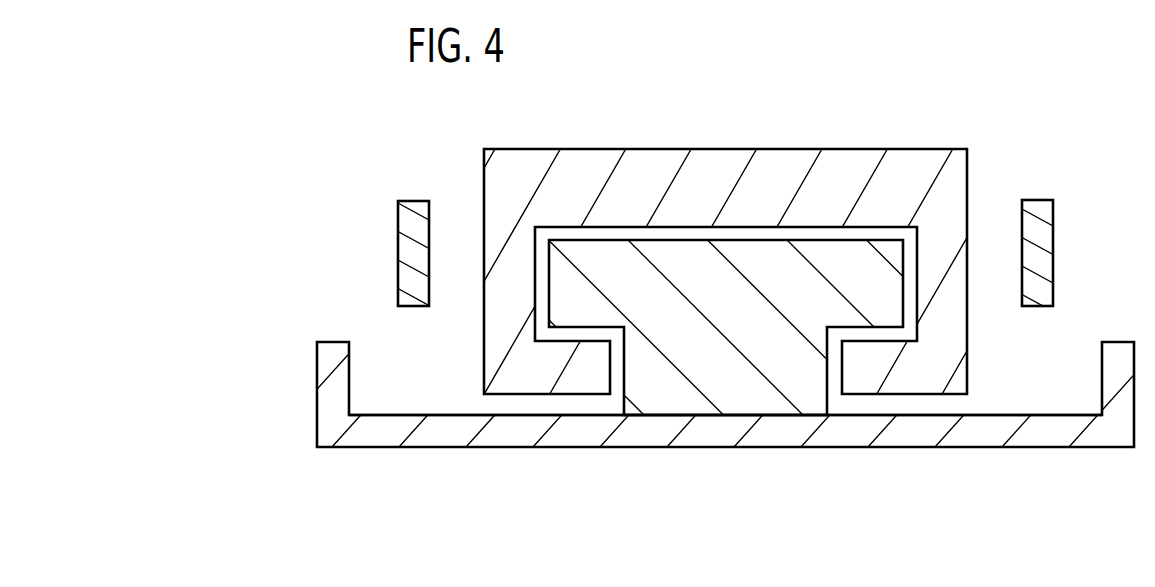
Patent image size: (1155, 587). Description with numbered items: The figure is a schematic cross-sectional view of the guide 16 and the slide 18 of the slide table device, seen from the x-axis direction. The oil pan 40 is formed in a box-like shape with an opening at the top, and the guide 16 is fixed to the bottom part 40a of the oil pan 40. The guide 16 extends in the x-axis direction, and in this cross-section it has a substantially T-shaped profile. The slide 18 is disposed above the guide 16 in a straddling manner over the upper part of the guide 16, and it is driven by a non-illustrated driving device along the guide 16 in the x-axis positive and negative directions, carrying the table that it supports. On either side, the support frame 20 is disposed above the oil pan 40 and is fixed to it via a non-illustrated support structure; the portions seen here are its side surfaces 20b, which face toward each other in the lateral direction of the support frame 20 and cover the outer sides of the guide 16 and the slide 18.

The guide 16 is at (725, 388).
The slide 18 is at (715, 149).
The support frame 20 is at (733, 230).
The side surfaces 20b is at (412, 249).
The oil pan 40 is at (308, 361).
The bottom part 40a is at (407, 415).